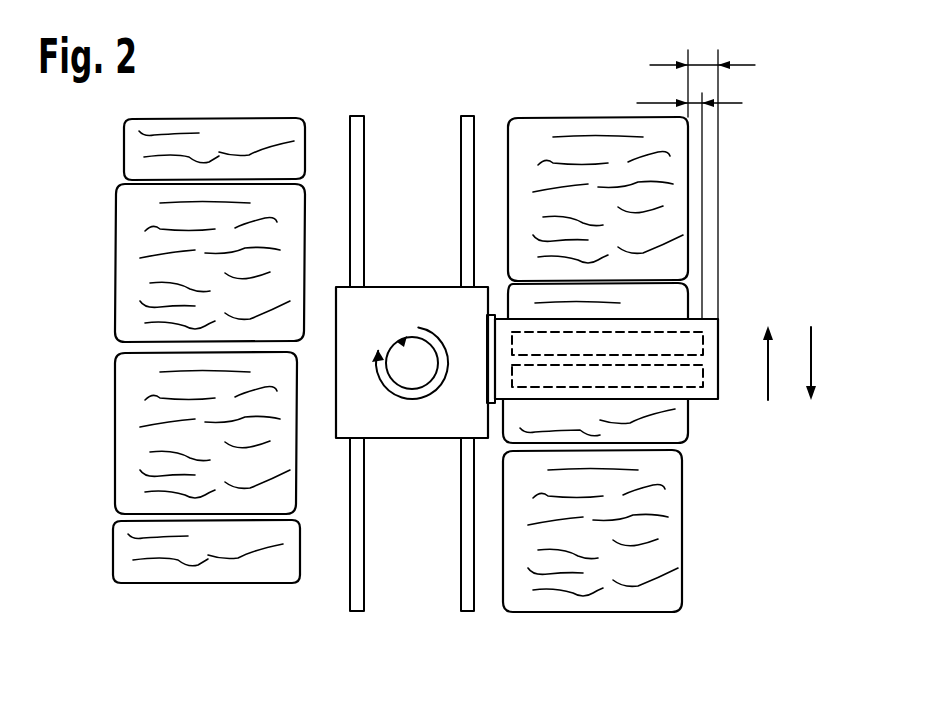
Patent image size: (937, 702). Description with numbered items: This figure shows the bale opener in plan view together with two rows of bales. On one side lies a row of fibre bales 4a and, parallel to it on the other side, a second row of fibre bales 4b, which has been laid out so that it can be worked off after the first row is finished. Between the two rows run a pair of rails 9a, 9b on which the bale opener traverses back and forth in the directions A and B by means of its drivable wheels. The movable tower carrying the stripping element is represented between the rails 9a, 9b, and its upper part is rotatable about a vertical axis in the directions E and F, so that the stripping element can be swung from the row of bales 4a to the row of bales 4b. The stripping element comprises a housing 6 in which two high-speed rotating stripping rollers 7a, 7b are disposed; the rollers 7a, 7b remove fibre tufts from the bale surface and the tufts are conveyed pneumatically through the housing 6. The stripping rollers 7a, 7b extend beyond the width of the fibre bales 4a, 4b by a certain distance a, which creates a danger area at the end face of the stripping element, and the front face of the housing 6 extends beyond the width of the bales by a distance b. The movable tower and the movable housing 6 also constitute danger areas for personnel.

The fibre bales 4a is at (670, 556).
The fibre bales 4b is at (127, 552).
The housing 6 is at (712, 333).
The stripping roller 7a is at (697, 398).
The stripping roller 7b is at (705, 350).
The rail 9a is at (357, 603).
The rail 9b is at (468, 603).
The rotation direction E is at (406, 338).
The rotation direction F is at (410, 399).
The travel direction A is at (768, 372).
The travel direction B is at (813, 357).
The distance a is at (655, 103).
The distance b is at (700, 65).